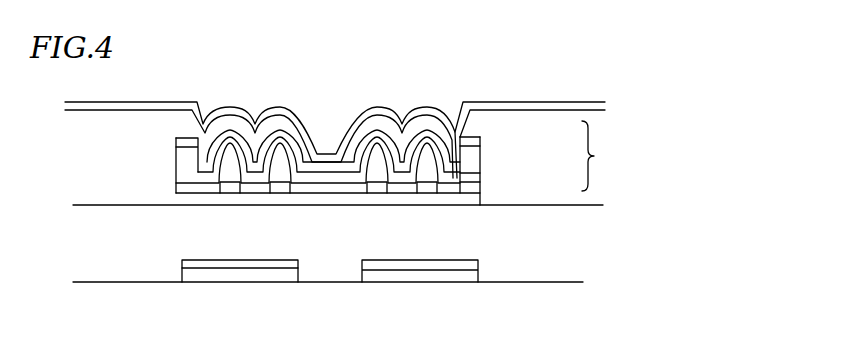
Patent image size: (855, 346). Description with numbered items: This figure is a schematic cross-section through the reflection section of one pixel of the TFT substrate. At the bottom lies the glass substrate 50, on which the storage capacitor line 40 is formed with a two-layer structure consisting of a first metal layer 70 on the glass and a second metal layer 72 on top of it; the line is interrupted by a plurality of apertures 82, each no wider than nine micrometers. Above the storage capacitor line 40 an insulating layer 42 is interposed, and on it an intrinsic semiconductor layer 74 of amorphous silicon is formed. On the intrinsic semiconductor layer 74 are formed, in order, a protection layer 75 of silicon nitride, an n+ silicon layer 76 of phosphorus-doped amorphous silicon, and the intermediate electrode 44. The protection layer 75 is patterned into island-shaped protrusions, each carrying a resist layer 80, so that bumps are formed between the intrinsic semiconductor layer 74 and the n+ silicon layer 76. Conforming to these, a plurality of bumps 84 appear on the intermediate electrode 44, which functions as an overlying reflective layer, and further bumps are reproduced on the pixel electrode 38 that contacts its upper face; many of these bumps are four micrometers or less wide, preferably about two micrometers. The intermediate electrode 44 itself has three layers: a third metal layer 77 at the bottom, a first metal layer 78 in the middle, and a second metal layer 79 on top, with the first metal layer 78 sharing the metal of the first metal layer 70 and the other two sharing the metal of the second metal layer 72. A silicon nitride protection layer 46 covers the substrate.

The pixel electrode 38 is at (498, 106).
The storage capacitor line 40 is at (95, 221).
The insulating layer 42 is at (585, 250).
The intermediate electrode 44 is at (394, 163).
The protection layer 46 is at (600, 180).
The glass substrate 50 is at (578, 297).
The first metal layer 70 is at (183, 278).
The second metal layer 72 is at (182, 266).
The intrinsic semiconductor layer 74 is at (177, 200).
The protection layer 75 is at (222, 189).
The n+ silicon layer 76 is at (478, 186).
The third metal layer 77 is at (478, 182).
The first metal layer 78 is at (470, 165).
The second metal layer 79 is at (478, 141).
The resist layer 80 is at (228, 143).
The aperture 82 is at (330, 266).
The bump 84 is at (424, 109).